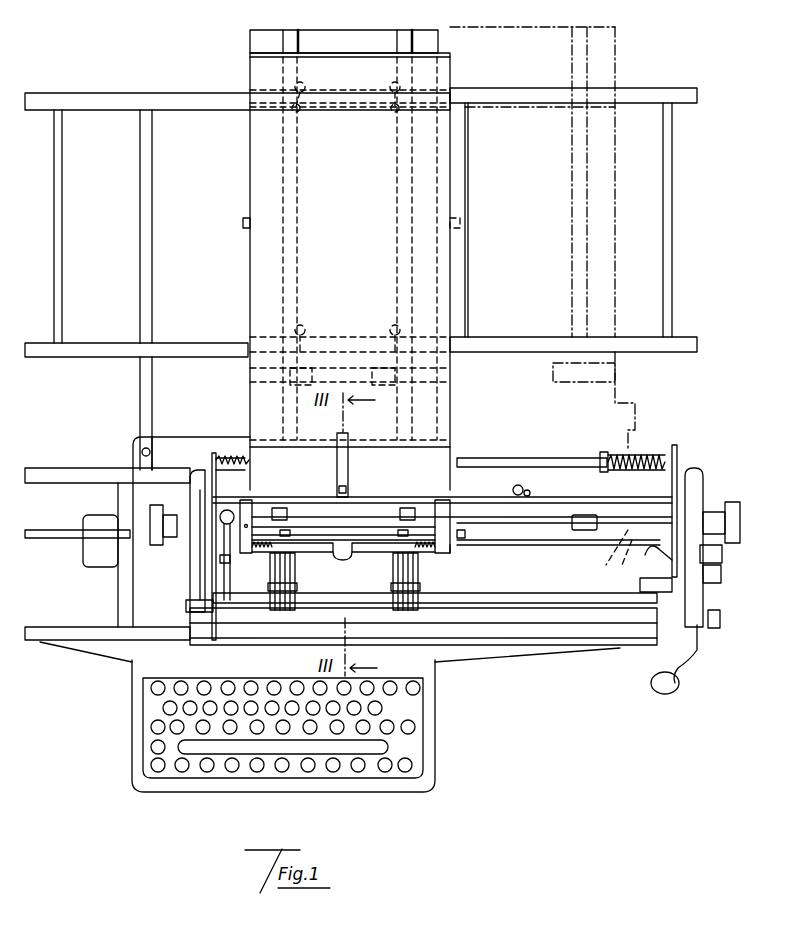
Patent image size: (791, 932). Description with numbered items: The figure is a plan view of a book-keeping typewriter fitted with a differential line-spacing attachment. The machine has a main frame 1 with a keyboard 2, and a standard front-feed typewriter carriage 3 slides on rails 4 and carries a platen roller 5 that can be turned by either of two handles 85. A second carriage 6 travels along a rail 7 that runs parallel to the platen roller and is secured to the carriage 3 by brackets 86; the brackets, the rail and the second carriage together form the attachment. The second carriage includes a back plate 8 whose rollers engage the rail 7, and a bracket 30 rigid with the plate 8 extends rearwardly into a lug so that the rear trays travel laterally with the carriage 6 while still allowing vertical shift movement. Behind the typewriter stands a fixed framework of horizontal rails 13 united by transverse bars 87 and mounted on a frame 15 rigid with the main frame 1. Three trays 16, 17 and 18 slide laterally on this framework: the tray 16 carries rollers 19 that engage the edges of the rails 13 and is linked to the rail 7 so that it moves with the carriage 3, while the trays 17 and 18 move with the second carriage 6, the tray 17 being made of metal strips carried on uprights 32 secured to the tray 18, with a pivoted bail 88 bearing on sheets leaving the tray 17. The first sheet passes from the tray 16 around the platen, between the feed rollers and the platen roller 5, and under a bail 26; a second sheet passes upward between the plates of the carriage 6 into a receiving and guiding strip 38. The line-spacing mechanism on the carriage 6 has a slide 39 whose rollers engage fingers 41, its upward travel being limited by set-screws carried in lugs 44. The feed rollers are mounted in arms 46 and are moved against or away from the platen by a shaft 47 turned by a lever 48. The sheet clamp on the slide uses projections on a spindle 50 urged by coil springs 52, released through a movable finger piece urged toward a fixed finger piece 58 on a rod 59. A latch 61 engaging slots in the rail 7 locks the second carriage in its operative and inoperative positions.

The main frame 1 is at (168, 436).
The keyboard 2 is at (151, 711).
The typewriter carriage 3 is at (192, 584).
The rails 4 is at (72, 474).
The platen roller 5 is at (516, 530).
The second carriage 6 is at (451, 555).
The rail 7 is at (548, 490).
The back plate 8 is at (316, 494).
The horizontal rails 13 is at (88, 100).
The frame 15 is at (150, 240).
The tray 16 is at (376, 62).
The tray 17 is at (287, 42).
The tray 18 is at (340, 38).
The rollers 19 is at (304, 86).
The bail 26 is at (565, 524).
The bracket 30 is at (458, 540).
The uprights 32 is at (243, 224).
The receiving and guiding strip 38 is at (348, 438).
The slide 39 is at (380, 514).
The fingers 41 is at (280, 508).
The lugs 44 is at (248, 516).
The arms 46 is at (300, 562).
The shaft 47 is at (514, 594).
The lever 48 is at (228, 576).
The spindle 50 is at (343, 560).
The coil springs 52 is at (266, 550).
The fixed finger piece 58 is at (358, 548).
The rod 59 is at (322, 548).
The latch 61 is at (466, 534).
The handles 85 is at (156, 508).
The brackets 86 is at (210, 470).
The transverse bars 87 is at (60, 250).
The pivoted bail 88 is at (310, 385).